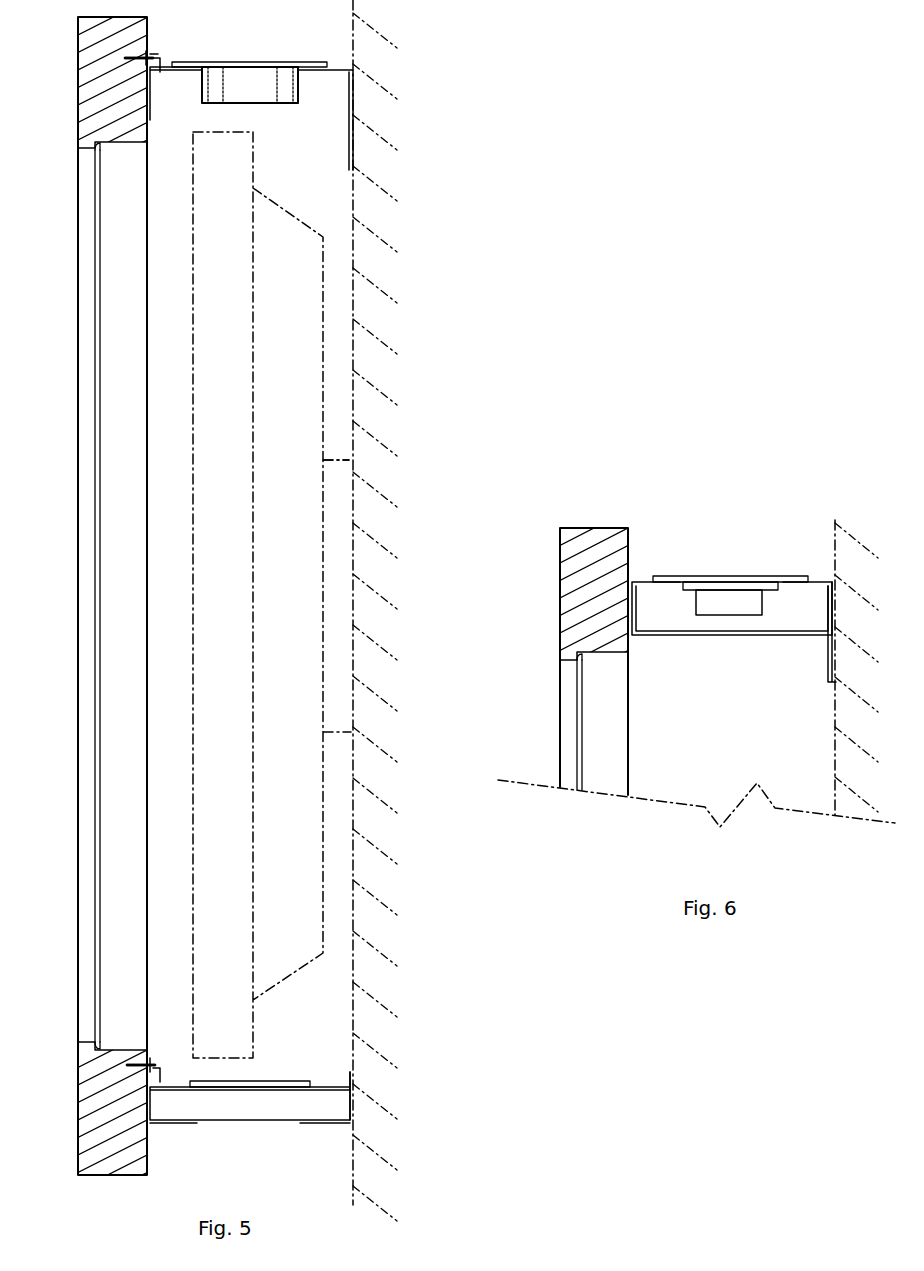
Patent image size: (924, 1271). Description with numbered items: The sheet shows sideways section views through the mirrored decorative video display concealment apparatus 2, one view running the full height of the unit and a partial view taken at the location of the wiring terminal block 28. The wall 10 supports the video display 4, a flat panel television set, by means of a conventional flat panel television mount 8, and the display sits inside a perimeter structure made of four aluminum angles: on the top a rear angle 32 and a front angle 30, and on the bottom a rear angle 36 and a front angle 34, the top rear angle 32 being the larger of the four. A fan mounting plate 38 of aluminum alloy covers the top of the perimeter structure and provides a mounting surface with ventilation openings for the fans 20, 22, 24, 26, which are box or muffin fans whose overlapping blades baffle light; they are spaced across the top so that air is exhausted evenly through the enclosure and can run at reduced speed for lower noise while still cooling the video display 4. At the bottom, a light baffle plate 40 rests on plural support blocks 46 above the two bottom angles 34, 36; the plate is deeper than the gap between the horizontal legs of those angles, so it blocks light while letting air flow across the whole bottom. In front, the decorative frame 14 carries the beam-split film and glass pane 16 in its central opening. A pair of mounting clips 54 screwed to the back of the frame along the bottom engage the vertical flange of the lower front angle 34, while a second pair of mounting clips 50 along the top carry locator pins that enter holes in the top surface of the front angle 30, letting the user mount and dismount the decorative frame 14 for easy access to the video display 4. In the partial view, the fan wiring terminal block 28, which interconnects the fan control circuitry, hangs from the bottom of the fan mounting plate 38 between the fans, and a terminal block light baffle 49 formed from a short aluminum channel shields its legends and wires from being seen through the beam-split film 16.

In FIG. 5, the mirrored decorative video display concealment apparatus 2 is at (24, 1165).
In FIG. 5, the video display 4 is at (193, 775).
In FIG. 5, the flat panel television mount 8 is at (340, 458).
In FIG. 5, the wall 10 is at (355, 248).
In FIG. 6, the wall 10 is at (835, 763).
In FIG. 5, the decorative frame 14 is at (78, 78).
In FIG. 6, the decorative frame 14 is at (560, 575).
In FIG. 5, the beam-split film and glass pane 16 is at (95, 226).
In FIG. 6, the beam-split film and glass pane 16 is at (577, 717).
In FIG. 5, the fan 20 is at (290, 103).
In FIG. 5, the fan 22 is at (250, 85).
In FIG. 5, the fan 24 is at (250, 85).
In FIG. 5, the fan 26 is at (250, 85).
In FIG. 6, the wiring terminal block 28 is at (710, 615).
In FIG. 5, the front angle 30 is at (150, 93).
In FIG. 6, the front angle 30 is at (637, 582).
In FIG. 5, the rear angle 32 is at (350, 153).
In FIG. 6, the rear angle 32 is at (822, 582).
In FIG. 5, the front angle 34 is at (165, 1123).
In FIG. 5, the rear angle 36 is at (355, 1112).
In FIG. 5, the fan mounting plate 38 is at (262, 62).
In FIG. 6, the fan mounting plate 38 is at (740, 576).
In FIG. 5, the light baffle plate 40 is at (276, 1082).
In FIG. 5, the support block 46 is at (245, 1123).
In FIG. 6, the terminal block light baffle 49 is at (765, 635).
In FIG. 5, the mounting clip 50 is at (150, 57).
In FIG. 5, the mounting clip 54 is at (150, 1060).